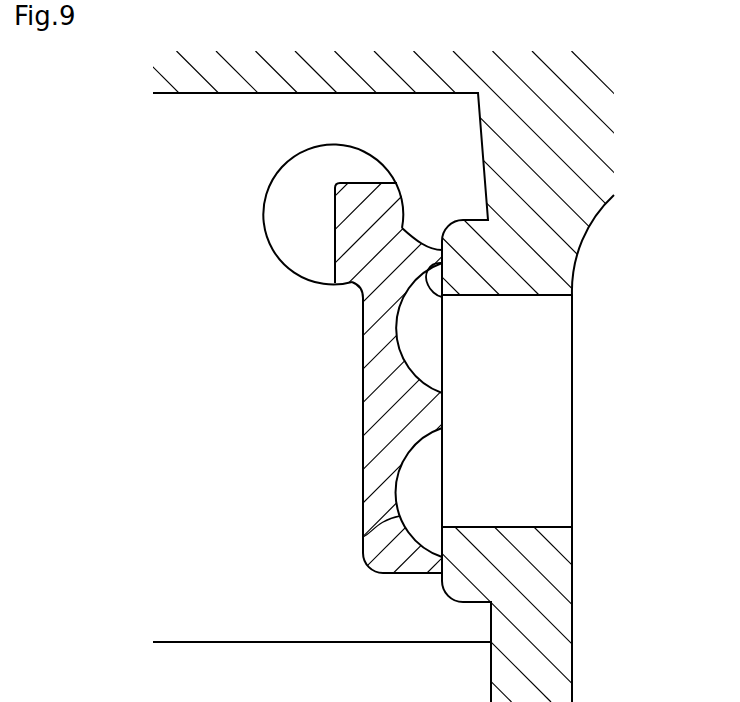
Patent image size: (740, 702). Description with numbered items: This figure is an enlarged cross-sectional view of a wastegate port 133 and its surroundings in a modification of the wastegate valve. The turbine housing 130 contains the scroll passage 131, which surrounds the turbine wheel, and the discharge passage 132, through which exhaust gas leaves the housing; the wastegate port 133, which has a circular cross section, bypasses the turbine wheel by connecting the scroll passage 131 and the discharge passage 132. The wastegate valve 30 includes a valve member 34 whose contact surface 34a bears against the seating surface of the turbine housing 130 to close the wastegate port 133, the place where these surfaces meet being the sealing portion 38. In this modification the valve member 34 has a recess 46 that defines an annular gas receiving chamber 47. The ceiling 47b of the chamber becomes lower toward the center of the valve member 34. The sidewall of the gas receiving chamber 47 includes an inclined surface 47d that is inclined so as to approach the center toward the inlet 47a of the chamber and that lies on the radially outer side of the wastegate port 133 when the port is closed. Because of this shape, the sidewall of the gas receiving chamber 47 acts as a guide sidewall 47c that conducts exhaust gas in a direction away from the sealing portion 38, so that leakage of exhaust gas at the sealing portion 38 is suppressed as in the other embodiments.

The turbine housing 130 is at (193, 82).
The scroll passage 131 is at (652, 625).
The discharge passage 132 is at (235, 621).
The wastegate port 133 is at (552, 527).
The seal 30 is at (370, 359).
The valve member 34 is at (363, 477).
The contact surface 34a is at (443, 348).
The sealing portion 38 is at (435, 200).
The recess 46 is at (363, 537).
The gas receiving chamber 47 is at (437, 344).
The inlet 47a is at (443, 376).
The ceiling 47b is at (443, 447).
The guide sidewall 47c is at (430, 553).
The inclined surface 47d is at (434, 293).